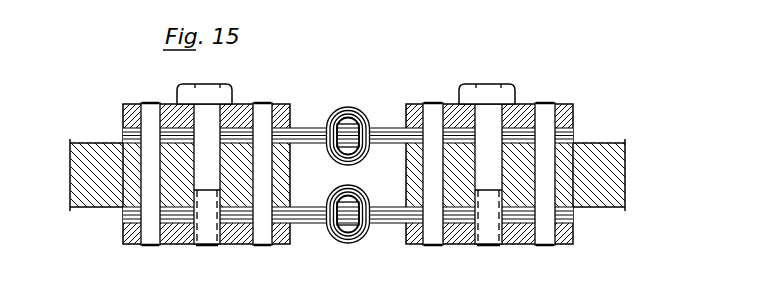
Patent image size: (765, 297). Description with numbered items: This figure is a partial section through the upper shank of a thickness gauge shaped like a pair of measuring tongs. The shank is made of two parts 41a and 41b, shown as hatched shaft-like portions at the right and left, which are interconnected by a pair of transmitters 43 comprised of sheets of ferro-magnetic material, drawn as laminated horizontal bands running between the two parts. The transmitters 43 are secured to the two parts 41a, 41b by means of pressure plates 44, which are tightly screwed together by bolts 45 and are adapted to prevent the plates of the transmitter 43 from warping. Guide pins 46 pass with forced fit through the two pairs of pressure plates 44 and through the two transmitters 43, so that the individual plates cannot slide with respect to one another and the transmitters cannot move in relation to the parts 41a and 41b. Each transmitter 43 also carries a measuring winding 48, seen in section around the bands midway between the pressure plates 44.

The first part of shank 41a is at (622, 161).
The second part of shank 41b is at (70, 175).
The transmitter 43 is at (390, 146).
The pressure plate 44 is at (290, 116).
The bolt 45 is at (228, 92).
The guide pin 46 is at (151, 246).
The measuring winding 48 is at (330, 194).